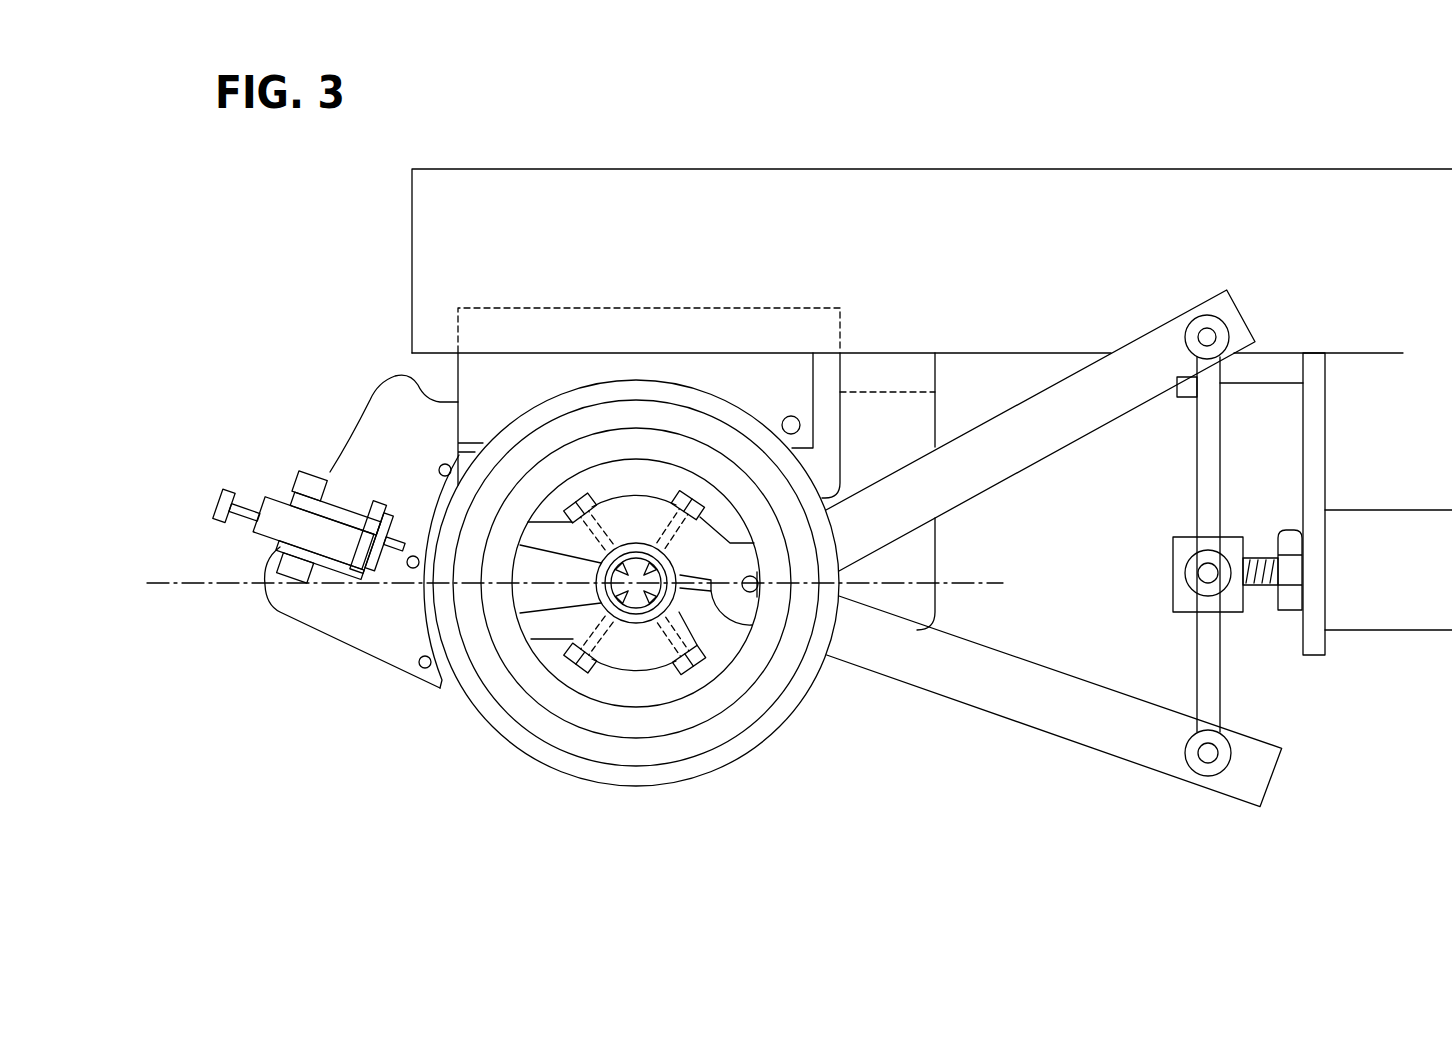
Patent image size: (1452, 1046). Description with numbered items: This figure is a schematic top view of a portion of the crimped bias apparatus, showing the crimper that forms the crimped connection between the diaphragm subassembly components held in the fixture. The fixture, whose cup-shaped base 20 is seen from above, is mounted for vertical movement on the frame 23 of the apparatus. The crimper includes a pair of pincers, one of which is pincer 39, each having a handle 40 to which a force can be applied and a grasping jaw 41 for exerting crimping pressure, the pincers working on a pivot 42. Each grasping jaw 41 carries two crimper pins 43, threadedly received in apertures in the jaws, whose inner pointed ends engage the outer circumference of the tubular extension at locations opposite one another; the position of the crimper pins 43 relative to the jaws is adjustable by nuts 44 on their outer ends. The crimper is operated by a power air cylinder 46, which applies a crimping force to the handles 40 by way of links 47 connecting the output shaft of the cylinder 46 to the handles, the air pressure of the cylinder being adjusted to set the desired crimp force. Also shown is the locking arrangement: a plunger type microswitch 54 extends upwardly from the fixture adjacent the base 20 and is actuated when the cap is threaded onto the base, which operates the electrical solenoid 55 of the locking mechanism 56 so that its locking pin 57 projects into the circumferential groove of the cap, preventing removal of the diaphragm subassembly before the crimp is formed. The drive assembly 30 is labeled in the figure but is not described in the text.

The cup-shaped base 20 is at (573, 768).
The frame 23 is at (487, 208).
The drive assembly 30 is at (967, 730).
The pincer 39 is at (1000, 393).
The handle 40 is at (1127, 368).
The grasping jaw 41 is at (625, 508).
The pivot 42 is at (753, 592).
The crimper pins 43 is at (650, 598).
The nuts 44 is at (580, 652).
The power air cylinder 46 is at (1367, 593).
The links 47 is at (1212, 467).
The microswitch 54 is at (797, 418).
The electrical solenoid 55 is at (307, 527).
The locking mechanism 56 is at (288, 475).
The locking pin 57 is at (403, 545).